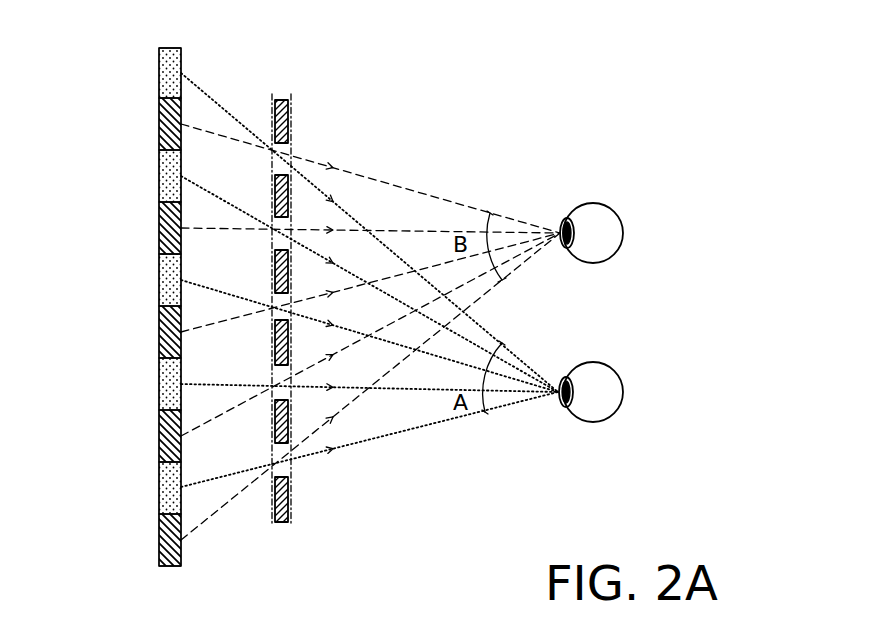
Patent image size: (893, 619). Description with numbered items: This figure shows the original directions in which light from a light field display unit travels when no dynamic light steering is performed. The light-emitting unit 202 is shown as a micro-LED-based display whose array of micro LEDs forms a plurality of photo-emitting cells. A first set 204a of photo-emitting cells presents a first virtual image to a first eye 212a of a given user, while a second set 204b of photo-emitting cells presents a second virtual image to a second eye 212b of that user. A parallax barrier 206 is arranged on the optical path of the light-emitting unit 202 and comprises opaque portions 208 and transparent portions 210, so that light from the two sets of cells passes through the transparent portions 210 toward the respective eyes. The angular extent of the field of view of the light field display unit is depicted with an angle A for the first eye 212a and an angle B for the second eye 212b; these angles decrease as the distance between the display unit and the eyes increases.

The light-emitting unit 202 is at (111, 283).
The first set of photo-emitting cells 204a is at (114, 281).
The second set of photo-emitting cells 204b is at (115, 332).
The parallax barrier 206 is at (330, 301).
The opaque portions 208 is at (350, 311).
The transparent portions 210 is at (370, 306).
The first eye 212a is at (651, 392).
The second eye 212b is at (652, 233).